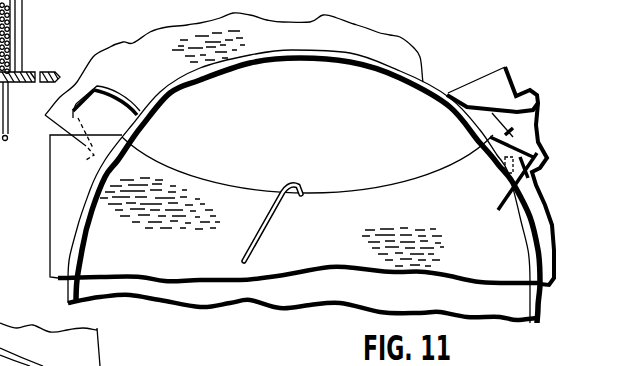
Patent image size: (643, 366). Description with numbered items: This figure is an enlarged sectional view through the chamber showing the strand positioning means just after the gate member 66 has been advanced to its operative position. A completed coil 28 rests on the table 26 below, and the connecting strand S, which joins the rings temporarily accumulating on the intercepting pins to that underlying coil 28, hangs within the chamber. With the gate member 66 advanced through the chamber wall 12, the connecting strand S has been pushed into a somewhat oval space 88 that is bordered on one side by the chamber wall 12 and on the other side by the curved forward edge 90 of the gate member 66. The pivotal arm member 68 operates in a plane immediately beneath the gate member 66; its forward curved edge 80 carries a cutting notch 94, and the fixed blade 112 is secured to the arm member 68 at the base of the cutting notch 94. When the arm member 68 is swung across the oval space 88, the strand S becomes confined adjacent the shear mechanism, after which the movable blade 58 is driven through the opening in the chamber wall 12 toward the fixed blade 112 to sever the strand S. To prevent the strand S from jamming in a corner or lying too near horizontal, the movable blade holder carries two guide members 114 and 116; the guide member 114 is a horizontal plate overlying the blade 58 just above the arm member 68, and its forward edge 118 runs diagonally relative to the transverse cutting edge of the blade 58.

The chamber wall 12 is at (287, 52).
The table 26 is at (22, 84).
The coil 28 is at (15, 23).
The blade 58 is at (512, 129).
The gate member 66 is at (62, 220).
The arm member 68 is at (159, 53).
The forward curved edge 80 is at (98, 331).
The oval space 88 is at (304, 135).
The curved forward edge 90 is at (364, 188).
The cutting notch 94 is at (96, 107).
The blade 112 is at (86, 122).
The guide member 114 is at (475, 88).
The guide member 116 is at (526, 186).
The forward edge 118 is at (452, 107).
The connecting strand S is at (258, 237).